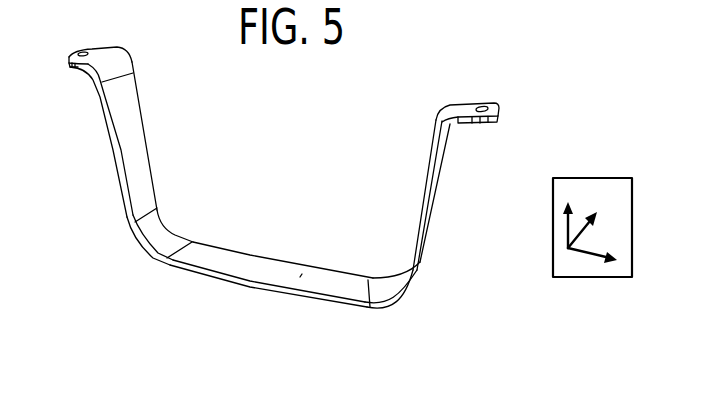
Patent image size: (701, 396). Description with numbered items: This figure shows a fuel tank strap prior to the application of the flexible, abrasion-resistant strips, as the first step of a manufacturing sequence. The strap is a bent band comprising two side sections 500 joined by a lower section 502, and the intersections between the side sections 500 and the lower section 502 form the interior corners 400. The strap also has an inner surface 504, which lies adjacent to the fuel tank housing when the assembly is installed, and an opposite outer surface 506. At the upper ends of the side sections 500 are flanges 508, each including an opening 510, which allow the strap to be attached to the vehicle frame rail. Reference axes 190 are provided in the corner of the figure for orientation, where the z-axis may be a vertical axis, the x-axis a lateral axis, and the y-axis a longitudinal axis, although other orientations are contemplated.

The side sections 500 is at (296, 193).
The interior corners 400 is at (183, 215).
The lower section 502 is at (280, 242).
The inner surface 504 is at (300, 277).
The outer surface 506 is at (293, 297).
The flanges 508 is at (480, 82).
The openings 510 is at (484, 103).
The reference axes 190 is at (552, 238).